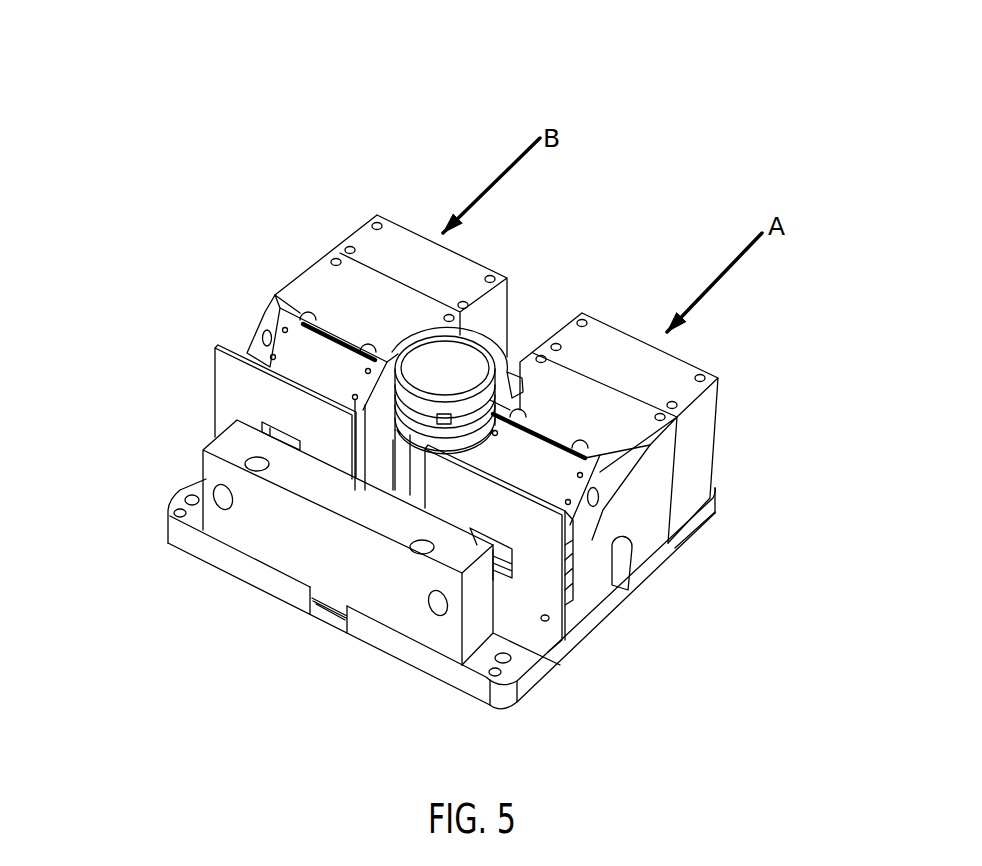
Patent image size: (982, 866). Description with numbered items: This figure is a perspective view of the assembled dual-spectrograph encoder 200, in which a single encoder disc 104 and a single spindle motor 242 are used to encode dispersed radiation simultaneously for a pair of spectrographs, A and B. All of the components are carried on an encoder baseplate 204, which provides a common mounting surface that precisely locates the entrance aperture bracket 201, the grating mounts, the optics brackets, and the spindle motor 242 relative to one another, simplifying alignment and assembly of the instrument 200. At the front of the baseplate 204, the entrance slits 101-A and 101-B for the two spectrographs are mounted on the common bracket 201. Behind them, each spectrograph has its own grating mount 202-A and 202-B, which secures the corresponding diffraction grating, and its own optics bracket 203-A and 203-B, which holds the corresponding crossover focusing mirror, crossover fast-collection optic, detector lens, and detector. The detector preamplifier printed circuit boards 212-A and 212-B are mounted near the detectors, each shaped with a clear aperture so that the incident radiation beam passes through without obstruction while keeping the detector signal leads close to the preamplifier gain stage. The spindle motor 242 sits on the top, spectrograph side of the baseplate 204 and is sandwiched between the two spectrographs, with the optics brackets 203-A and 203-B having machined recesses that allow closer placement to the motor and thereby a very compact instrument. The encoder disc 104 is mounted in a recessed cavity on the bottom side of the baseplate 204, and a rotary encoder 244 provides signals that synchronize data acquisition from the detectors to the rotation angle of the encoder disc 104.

The dual-spectrograph encoder 200 is at (232, 90).
The grating mount 202-B is at (355, 218).
The optics bracket 203-B is at (286, 286).
The detector preamplifier printed circuit board 212-B is at (213, 373).
The entrance slit 101-B is at (231, 494).
The encoder disc 104 is at (330, 616).
The entrance slit 101-A is at (440, 604).
The entrance aperture bracket 201 is at (484, 618).
The encoder baseplate 204 is at (549, 682).
The detector preamplifier printed circuit board 212-A is at (569, 572).
The optics bracket 203-A is at (654, 540).
The grating mount 202-A is at (718, 433).
The spindle motor 242 is at (492, 343).
The rotary encoder 244 is at (439, 411).